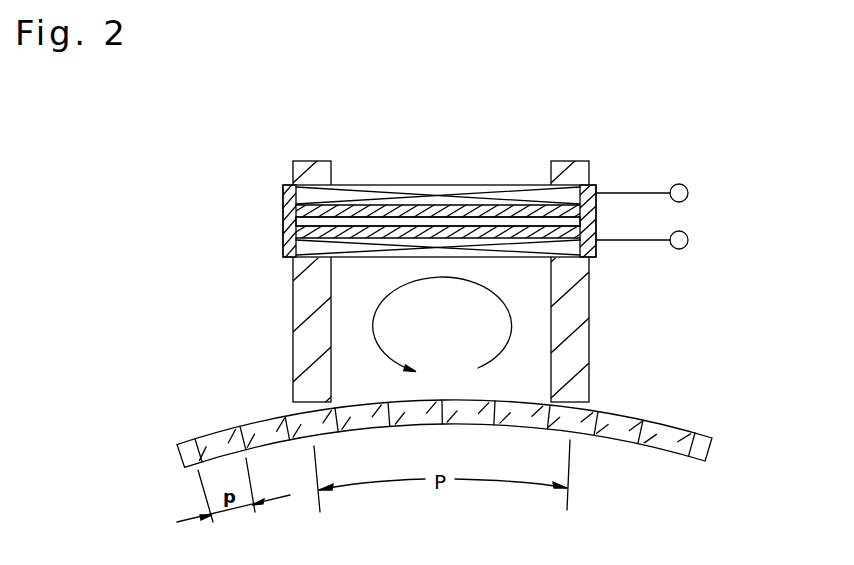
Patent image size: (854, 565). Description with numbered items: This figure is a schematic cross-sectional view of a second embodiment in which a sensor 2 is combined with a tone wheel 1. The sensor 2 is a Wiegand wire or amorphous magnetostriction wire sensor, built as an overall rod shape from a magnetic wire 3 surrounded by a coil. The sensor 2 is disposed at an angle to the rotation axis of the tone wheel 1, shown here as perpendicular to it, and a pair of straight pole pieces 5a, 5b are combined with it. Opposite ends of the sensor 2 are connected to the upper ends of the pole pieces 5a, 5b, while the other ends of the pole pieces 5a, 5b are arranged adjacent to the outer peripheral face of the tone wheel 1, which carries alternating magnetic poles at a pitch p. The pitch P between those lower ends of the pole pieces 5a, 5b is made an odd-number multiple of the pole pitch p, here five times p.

The tone wheel 1 is at (627, 412).
The sensor 2 is at (440, 190).
The magnetic wire 3 is at (383, 218).
The pole piece 5a is at (295, 284).
The pole piece 5b is at (589, 335).